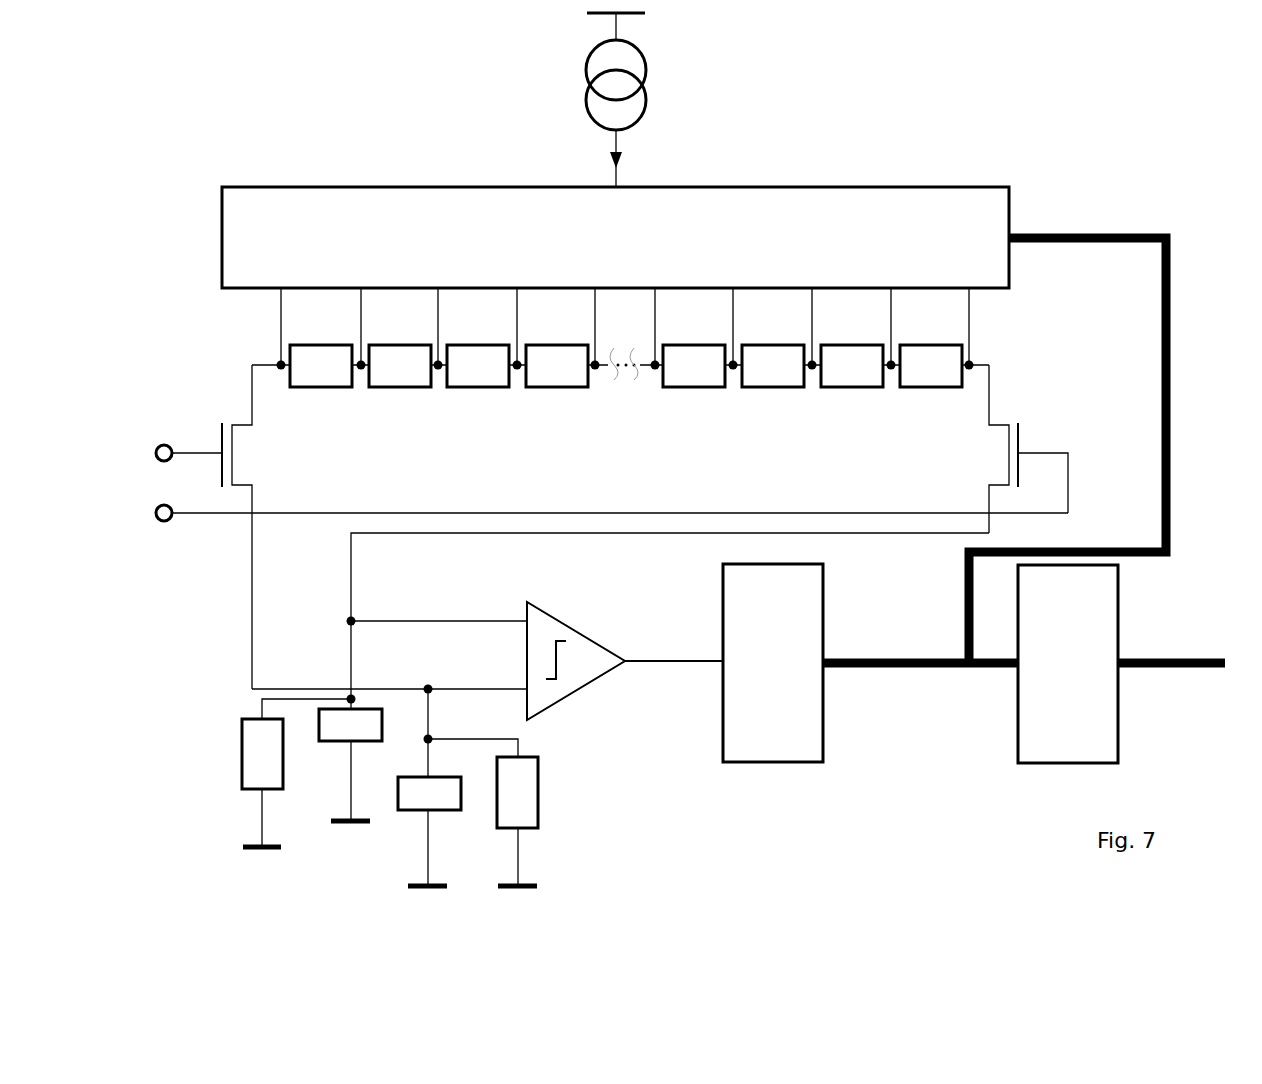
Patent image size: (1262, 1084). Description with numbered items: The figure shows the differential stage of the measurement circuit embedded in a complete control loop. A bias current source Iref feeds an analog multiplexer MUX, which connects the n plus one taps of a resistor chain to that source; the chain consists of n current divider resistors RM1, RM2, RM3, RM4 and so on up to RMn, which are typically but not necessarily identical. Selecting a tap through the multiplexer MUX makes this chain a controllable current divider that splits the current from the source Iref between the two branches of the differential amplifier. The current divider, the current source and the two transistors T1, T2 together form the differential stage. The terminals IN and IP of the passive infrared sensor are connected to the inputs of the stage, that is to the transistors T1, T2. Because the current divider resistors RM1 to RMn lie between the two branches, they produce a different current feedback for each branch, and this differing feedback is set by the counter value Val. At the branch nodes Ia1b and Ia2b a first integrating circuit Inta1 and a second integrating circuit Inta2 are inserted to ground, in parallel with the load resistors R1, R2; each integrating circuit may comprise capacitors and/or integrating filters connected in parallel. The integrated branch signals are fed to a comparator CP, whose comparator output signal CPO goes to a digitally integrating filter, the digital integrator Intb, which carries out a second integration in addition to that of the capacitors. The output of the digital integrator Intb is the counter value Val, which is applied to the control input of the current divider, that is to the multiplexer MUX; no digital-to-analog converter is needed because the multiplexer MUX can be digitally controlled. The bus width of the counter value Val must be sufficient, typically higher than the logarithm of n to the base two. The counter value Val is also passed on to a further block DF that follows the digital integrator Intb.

The bias current source Iref is at (627, 100).
The analog multiplexer MUX is at (615, 237).
The current divider resistor RM1 is at (321, 389).
The current divider resistor RM2 is at (400, 389).
The current divider resistor RM3 is at (478, 389).
The current divider resistor RM4 is at (557, 389).
The current divider resistor RMn is at (931, 389).
The transistor T1 is at (246, 527).
The transistor T2 is at (1013, 449).
The terminal of the passive infrared sensor IN is at (158, 454).
The terminal of the passive infrared sensor IP is at (582, 514).
The node Ia1b is at (366, 639).
The node Ia2b is at (668, 621).
The load resistor R1 is at (534, 821).
The load resistor R2 is at (240, 783).
The first integrating circuit Inta1 is at (452, 812).
The second integrating circuit Inta2 is at (318, 744).
The comparator CP is at (576, 649).
The comparator output signal CPO is at (674, 680).
The digital integrator Intb is at (773, 663).
The counter value Val is at (1024, 450).
The digital filter DF is at (1068, 664).